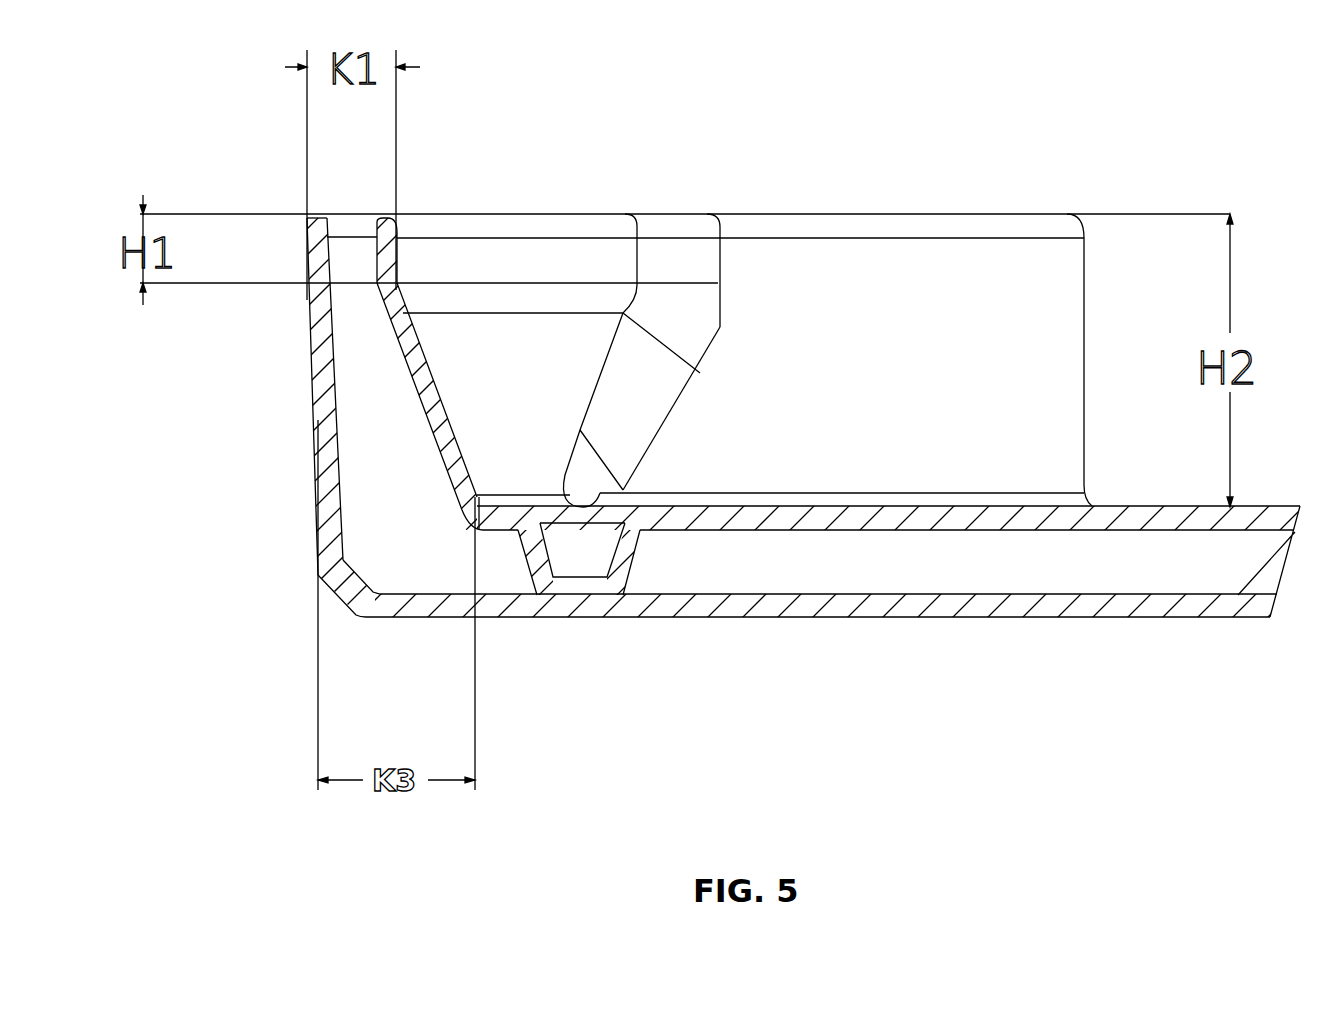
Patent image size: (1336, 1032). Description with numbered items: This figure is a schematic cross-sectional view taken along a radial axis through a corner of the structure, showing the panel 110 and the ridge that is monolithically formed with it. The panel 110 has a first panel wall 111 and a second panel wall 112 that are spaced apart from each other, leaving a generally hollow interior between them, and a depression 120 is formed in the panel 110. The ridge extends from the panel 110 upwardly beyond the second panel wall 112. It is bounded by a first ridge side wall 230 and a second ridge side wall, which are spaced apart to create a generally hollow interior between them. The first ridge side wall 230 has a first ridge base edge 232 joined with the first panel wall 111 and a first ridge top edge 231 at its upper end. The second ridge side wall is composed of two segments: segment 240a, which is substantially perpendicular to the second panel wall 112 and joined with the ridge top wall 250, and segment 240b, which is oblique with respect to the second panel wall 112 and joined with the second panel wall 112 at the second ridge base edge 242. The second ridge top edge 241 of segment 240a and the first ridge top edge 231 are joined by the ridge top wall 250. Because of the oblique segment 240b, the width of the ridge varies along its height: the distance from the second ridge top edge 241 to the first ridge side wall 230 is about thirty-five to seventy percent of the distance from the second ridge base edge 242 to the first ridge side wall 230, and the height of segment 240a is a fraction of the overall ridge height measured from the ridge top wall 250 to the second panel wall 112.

The panel 110 is at (1128, 570).
The first panel wall 111 is at (975, 602).
The second panel wall 112 is at (873, 520).
The depression 120 is at (573, 553).
The first ridge side wall 230 is at (323, 363).
The first ridge top edge 231 is at (343, 220).
The first ridge base edge 232 is at (329, 564).
The segment 240a is at (393, 262).
The segment 240b is at (447, 400).
The second ridge top edge 241 is at (382, 232).
The second ridge base edge 242 is at (475, 497).
The ridge top wall 250 is at (313, 230).